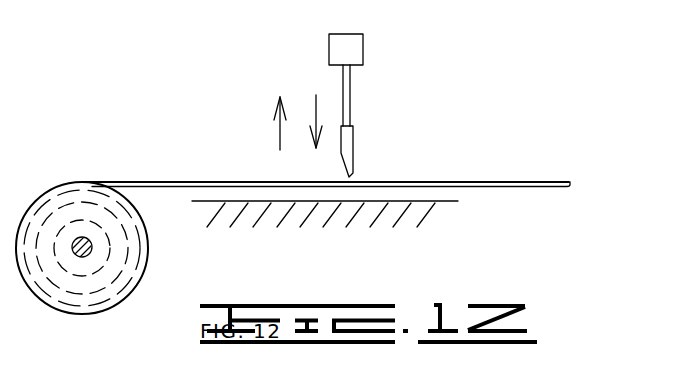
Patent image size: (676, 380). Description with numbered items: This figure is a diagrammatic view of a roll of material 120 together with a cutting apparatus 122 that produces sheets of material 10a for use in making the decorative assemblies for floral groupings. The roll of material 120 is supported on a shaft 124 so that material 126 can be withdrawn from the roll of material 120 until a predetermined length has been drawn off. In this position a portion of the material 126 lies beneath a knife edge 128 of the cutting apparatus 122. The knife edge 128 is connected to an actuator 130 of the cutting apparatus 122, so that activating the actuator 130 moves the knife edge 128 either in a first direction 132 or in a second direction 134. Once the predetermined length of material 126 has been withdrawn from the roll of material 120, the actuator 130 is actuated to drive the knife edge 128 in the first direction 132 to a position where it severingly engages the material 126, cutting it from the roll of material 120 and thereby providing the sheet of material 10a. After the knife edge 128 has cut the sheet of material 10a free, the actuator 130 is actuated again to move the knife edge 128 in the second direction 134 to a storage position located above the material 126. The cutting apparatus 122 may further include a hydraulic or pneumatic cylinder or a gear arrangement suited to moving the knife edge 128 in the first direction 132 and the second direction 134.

The sheet of material 10a is at (473, 177).
The roll of material 120 is at (148, 271).
The cutting apparatus 122 is at (397, 87).
The shaft 124 is at (92, 247).
The material 126 is at (170, 181).
The knife edge 128 is at (353, 143).
The actuator 130 is at (363, 40).
The first direction 132 is at (312, 108).
The second direction 134 is at (278, 135).